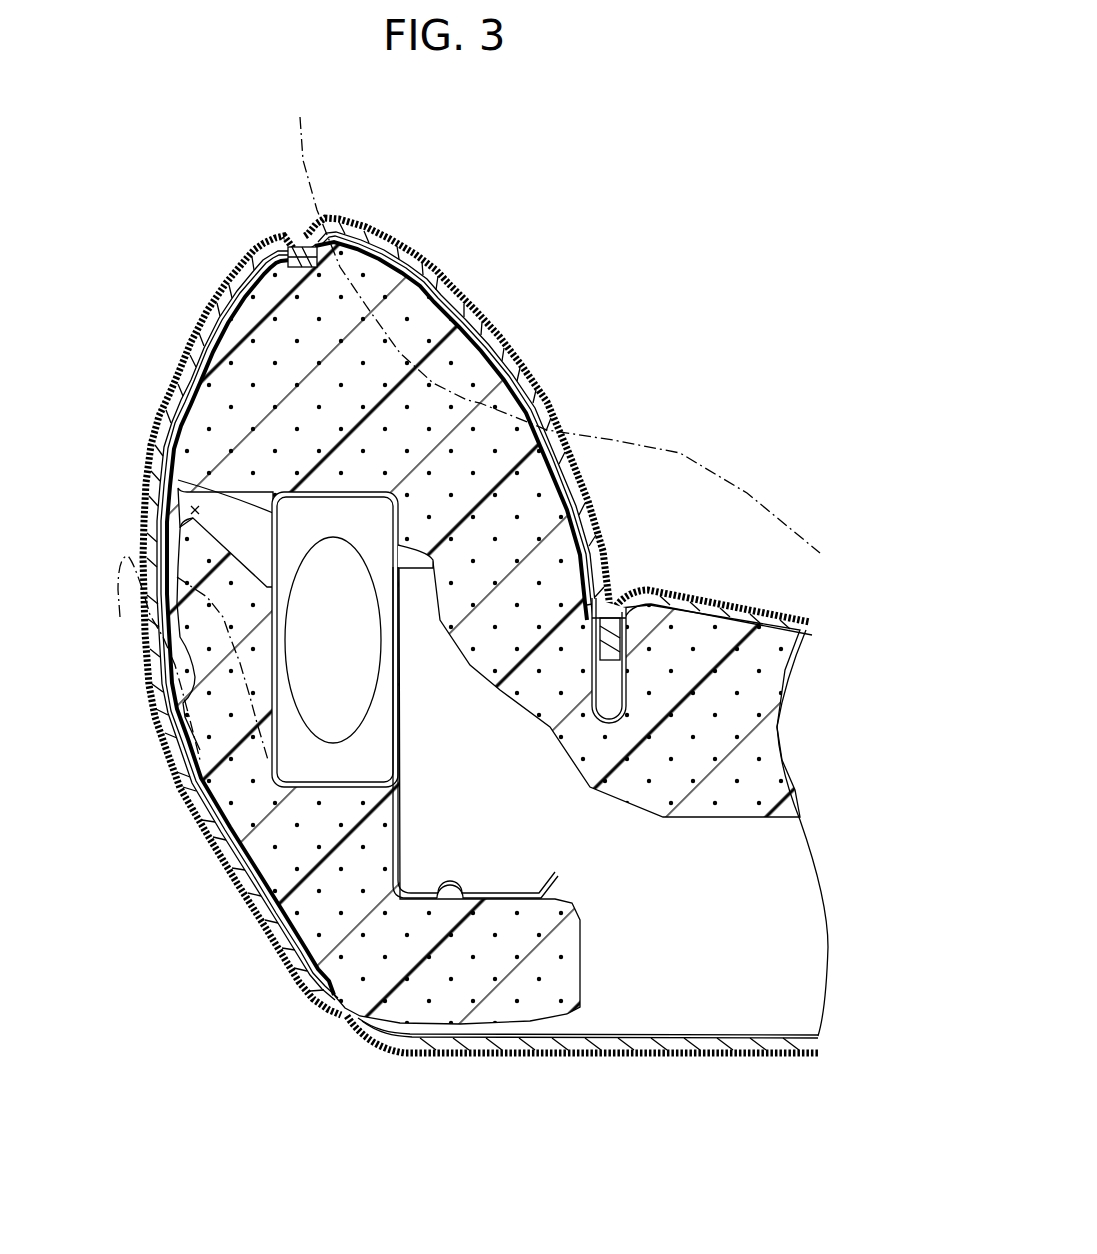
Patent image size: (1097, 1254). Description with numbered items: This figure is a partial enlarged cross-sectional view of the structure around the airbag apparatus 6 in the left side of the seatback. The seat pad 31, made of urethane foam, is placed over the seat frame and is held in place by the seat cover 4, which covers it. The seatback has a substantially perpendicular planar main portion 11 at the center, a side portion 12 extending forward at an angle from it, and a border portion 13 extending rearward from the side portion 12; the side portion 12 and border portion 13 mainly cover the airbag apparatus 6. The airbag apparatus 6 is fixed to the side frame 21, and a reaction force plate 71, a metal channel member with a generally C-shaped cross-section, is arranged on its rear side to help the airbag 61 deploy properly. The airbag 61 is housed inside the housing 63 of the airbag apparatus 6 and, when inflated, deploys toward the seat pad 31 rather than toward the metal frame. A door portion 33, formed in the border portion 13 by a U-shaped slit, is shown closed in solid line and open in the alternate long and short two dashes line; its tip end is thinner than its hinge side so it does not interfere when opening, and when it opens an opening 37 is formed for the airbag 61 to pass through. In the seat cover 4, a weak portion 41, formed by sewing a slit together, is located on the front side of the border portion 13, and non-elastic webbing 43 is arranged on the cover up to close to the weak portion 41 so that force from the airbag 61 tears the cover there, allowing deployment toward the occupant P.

The seat pad 31 is at (273, 340).
The seat cover 4 is at (187, 347).
The border portion 13 is at (168, 387).
The side portion 12 is at (588, 476).
The webbing 43 is at (187, 747).
The weak portion 41 is at (300, 247).
The main portion 11 is at (677, 594).
The airbag apparatus 6 is at (178, 480).
The airbag 61 is at (390, 702).
The housing 63 is at (410, 568).
The reaction force plate 71 is at (355, 793).
The side frame 21 is at (503, 897).
The opening 37 is at (190, 510).
The door portion 33 is at (188, 555).
The occupant P is at (300, 160).